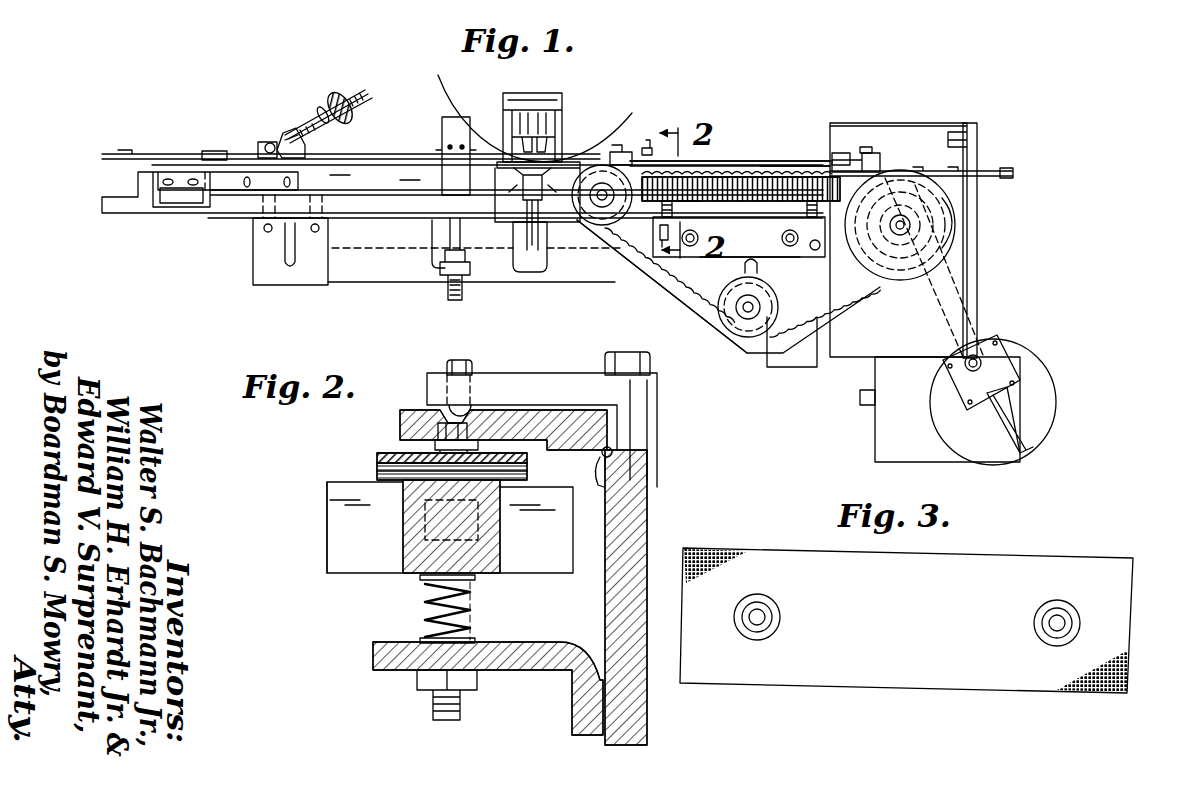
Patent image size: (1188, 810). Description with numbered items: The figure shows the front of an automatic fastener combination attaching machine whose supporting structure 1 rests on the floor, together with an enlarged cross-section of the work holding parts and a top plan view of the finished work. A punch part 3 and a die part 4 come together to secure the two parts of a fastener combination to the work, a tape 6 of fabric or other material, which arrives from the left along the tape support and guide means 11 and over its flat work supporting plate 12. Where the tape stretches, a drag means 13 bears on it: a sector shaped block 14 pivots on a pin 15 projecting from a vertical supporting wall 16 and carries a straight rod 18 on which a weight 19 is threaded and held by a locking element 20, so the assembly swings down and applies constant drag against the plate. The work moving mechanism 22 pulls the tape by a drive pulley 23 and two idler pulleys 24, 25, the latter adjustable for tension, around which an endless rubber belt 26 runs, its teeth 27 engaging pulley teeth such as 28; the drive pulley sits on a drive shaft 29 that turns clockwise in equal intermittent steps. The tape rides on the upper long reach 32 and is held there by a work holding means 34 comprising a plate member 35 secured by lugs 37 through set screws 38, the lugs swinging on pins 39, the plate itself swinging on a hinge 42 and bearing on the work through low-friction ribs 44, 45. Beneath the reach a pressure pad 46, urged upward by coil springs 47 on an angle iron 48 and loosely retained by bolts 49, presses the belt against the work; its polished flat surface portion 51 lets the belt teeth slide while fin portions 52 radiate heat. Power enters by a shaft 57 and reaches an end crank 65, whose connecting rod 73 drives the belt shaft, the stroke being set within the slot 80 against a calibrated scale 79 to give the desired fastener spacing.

In FIG. 1, the supporting structure 1 is at (255, 242).
In FIG. 1, the punch part 3 is at (554, 139).
In FIG. 1, the die part 4 is at (525, 195).
In FIG. 1, the tape 6 is at (478, 165).
In FIG. 2, the tape 6 is at (430, 455).
In FIG. 3, the tape 6 is at (783, 548).
In FIG. 1, the tape support and guide means 11 is at (356, 162).
In FIG. 1, the flat work supporting plate 12 is at (398, 163).
In FIG. 1, the drag means 13 is at (351, 88).
In FIG. 1, the sector shaped block 14 is at (280, 135).
In FIG. 1, the pin 15 is at (258, 145).
In FIG. 1, the vertical supporting wall 16 is at (268, 143).
In FIG. 1, the straight rod 18 is at (362, 101).
In FIG. 1, the weight 19 is at (336, 96).
In FIG. 1, the locking element 20 is at (322, 106).
In FIG. 1, the work moving mechanism 22 is at (791, 160).
In FIG. 2, the work moving mechanism 22 is at (332, 582).
In FIG. 1, the drive pulley 23 is at (916, 280).
In FIG. 1, the idler pulley 24 is at (577, 208).
In FIG. 1, the idler pulley 25 is at (742, 338).
In FIG. 1, the endless rubber belt 26 is at (836, 304).
In FIG. 2, the endless rubber belt 26 is at (375, 458).
In FIG. 1, the belt teeth 27 is at (740, 298).
In FIG. 2, the belt teeth 27 is at (527, 472).
In FIG. 1, the pulley teeth 28 is at (952, 222).
In FIG. 1, the drive shaft 29 is at (900, 235).
In FIG. 1, the upper long reach 32 is at (760, 176).
In FIG. 1, the work holding means 34 is at (740, 164).
In FIG. 1, the plate member 35 is at (718, 159).
In FIG. 2, the plate member 35 is at (400, 413).
In FIG. 1, the lugs 37 is at (622, 150).
In FIG. 2, the lugs 37 is at (550, 369).
In FIG. 1, the set screws 38 is at (647, 148).
In FIG. 2, the set screws 38 is at (459, 360).
In FIG. 1, the pins 39 is at (646, 150).
In FIG. 2, the pins 39 is at (630, 352).
In FIG. 2, the hinge 42 is at (612, 455).
In FIG. 2, the rib 44 is at (438, 436).
In FIG. 2, the rib 45 is at (480, 445).
In FIG. 1, the pressure pad 46 is at (765, 206).
In FIG. 2, the pressure pad 46 is at (325, 523).
In FIG. 1, the coil springs 47 is at (662, 212).
In FIG. 2, the coil springs 47 is at (474, 608).
In FIG. 1, the angle iron 48 is at (760, 248).
In FIG. 2, the angle iron 48 is at (390, 670).
In FIG. 1, the bolts 49 is at (660, 230).
In FIG. 2, the bolts 49 is at (462, 705).
In FIG. 1, the flat surface portion 51 is at (805, 176).
In FIG. 2, the flat surface portion 51 is at (400, 472).
In FIG. 1, the fin portions 52 is at (683, 198).
In FIG. 2, the fin portions 52 is at (378, 573).
In FIG. 1, the shaft 57 is at (860, 400).
In FIG. 1, the end crank 65 is at (1056, 398).
In FIG. 1, the connecting rod 73 is at (970, 283).
In FIG. 1, the scale 79 is at (1003, 366).
In FIG. 1, the slot 80 is at (1005, 427).